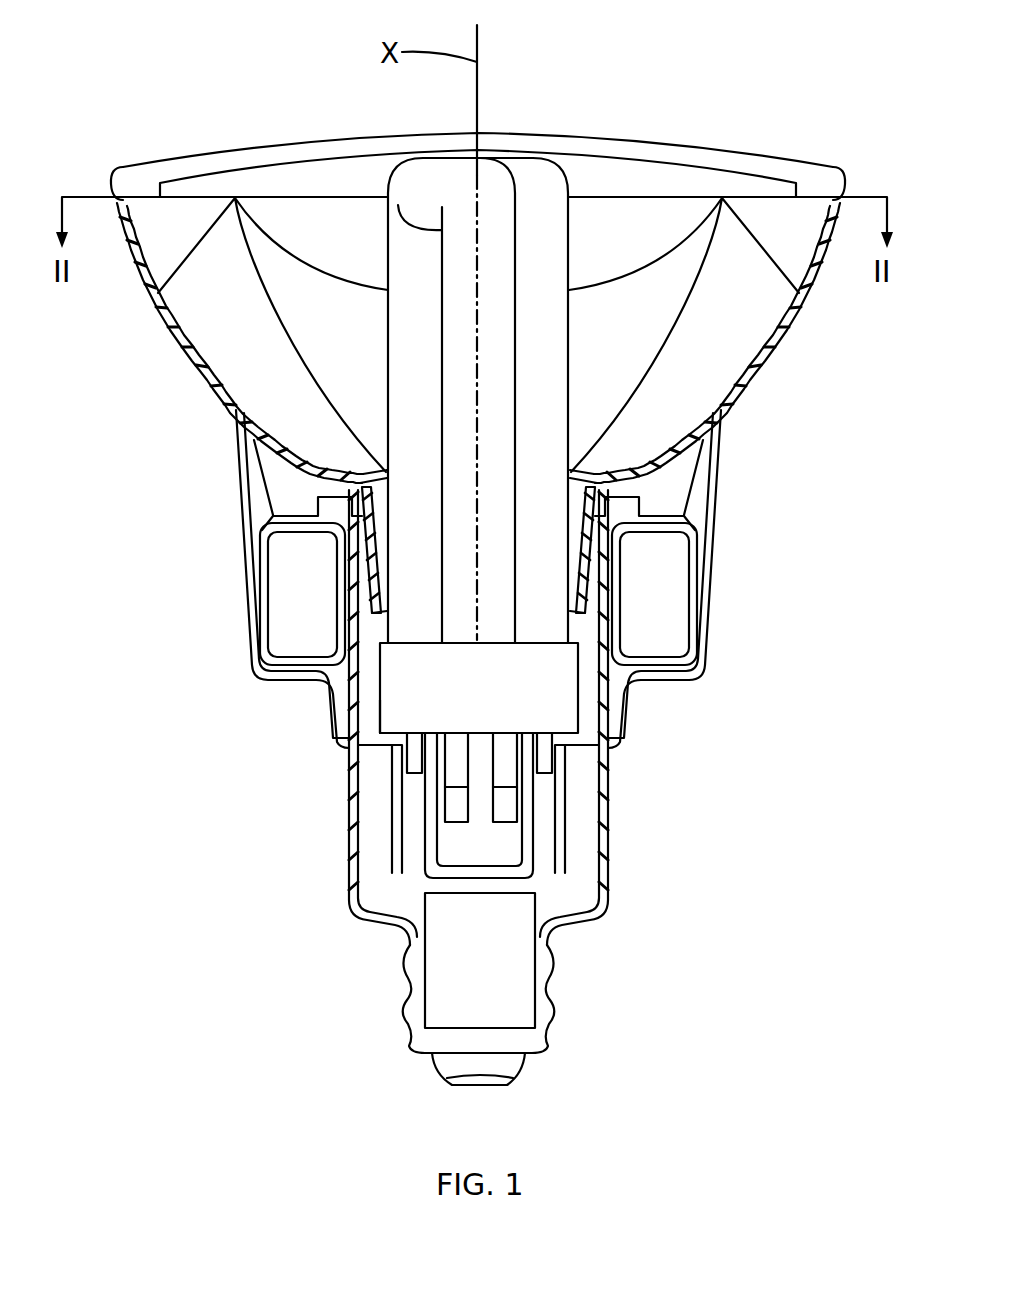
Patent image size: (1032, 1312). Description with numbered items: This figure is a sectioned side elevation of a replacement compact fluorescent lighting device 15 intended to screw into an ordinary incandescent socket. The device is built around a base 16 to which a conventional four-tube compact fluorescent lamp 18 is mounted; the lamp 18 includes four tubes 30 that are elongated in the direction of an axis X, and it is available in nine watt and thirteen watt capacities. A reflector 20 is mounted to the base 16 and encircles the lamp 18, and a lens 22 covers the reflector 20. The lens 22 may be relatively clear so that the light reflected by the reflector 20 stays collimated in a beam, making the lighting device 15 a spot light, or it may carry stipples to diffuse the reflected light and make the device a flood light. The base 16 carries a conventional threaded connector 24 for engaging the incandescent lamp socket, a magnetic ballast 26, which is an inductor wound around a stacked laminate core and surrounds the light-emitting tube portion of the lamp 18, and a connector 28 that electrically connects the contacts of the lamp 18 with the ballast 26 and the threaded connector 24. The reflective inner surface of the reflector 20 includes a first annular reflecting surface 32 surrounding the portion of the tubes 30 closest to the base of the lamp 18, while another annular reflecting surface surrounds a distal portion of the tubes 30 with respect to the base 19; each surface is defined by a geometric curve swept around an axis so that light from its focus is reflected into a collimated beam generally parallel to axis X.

The replacement fluorescent lighting device 15 is at (569, 126).
The lens 22 is at (658, 150).
The reflector 20 is at (773, 350).
The tubes 30 is at (393, 340).
The compact fluorescent lamp 18 is at (582, 686).
The base 19 is at (412, 706).
The connector 28 is at (400, 770).
The base 16 is at (605, 832).
The magnetic ballast 26 is at (675, 602).
The first annular reflecting surface 32 is at (377, 557).
The threaded connector 24 is at (540, 1042).